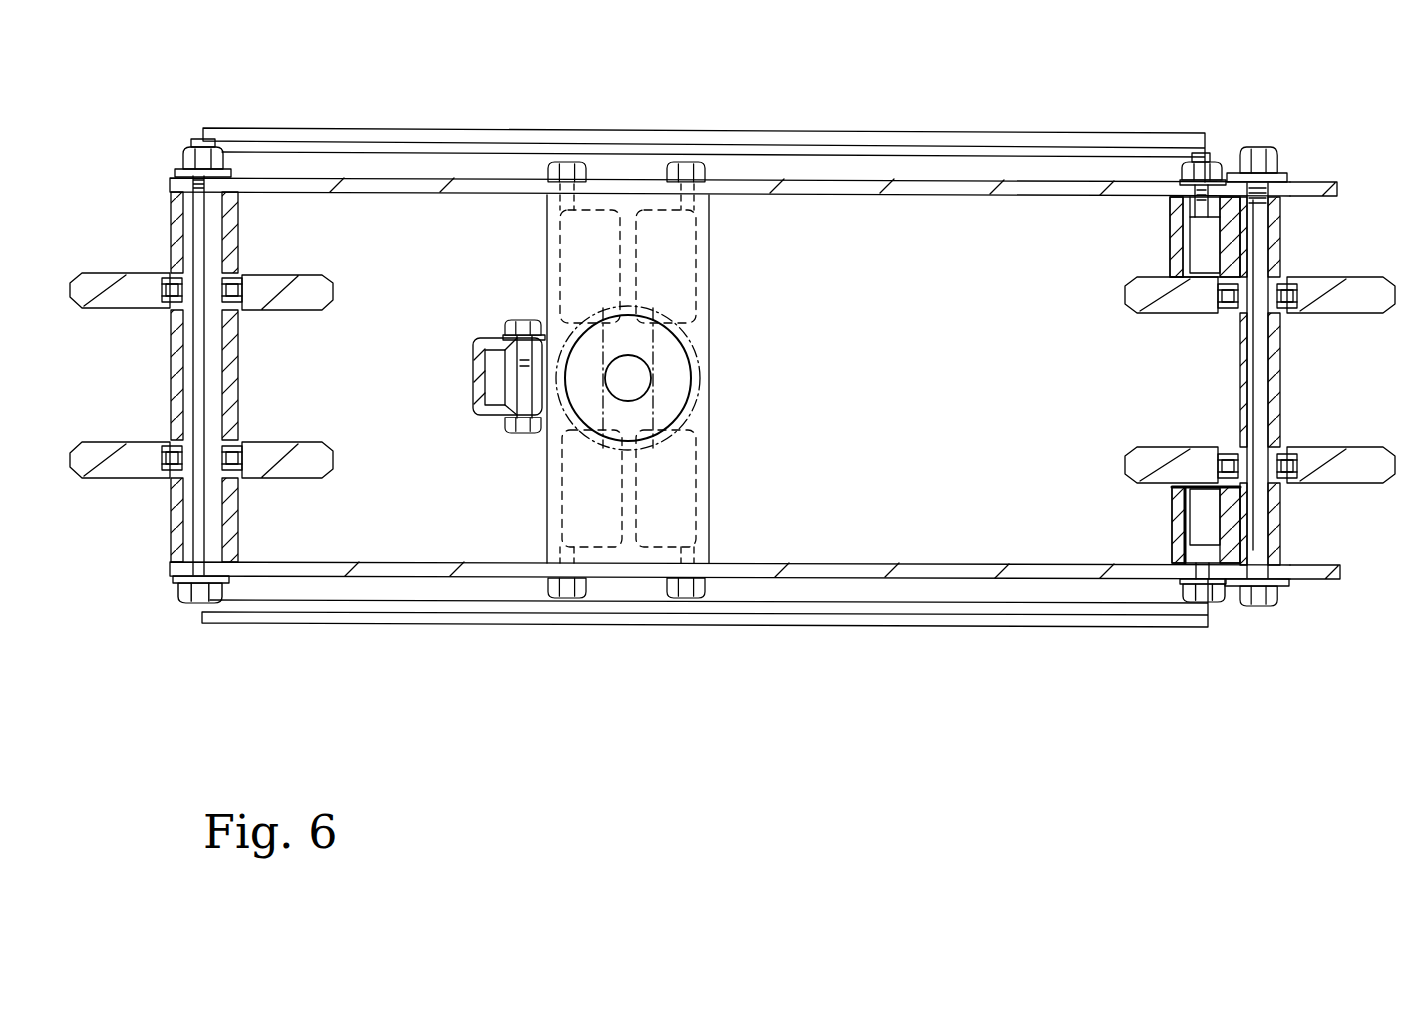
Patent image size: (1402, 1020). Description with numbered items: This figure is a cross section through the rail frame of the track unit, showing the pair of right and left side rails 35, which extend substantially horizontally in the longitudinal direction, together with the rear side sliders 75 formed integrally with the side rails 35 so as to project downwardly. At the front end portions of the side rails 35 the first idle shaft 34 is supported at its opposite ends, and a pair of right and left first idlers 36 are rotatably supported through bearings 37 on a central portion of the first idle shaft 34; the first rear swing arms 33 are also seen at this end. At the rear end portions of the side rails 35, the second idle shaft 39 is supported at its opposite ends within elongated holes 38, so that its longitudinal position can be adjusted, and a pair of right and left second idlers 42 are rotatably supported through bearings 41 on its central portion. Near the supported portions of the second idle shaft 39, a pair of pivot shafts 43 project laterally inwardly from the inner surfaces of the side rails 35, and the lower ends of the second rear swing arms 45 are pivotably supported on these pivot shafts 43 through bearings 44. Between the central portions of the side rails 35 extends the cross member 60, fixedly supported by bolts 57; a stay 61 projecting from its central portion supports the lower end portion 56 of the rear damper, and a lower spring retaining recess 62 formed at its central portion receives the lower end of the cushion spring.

The first rear swing arm 33 is at (176, 222).
The first idle shaft 34 is at (172, 514).
The side rail 35 is at (914, 197).
The first idler 36 is at (300, 442).
The bearing 37 is at (234, 445).
The elongated hole 38 is at (1308, 183).
The second idle shaft 39 is at (1262, 381).
The bearing 41 is at (1292, 308).
The second idler 42 is at (1357, 295).
The pivot shaft 43 is at (1182, 202).
The bearing 44 is at (1192, 216).
The second rear swing arm 45 is at (1176, 247).
The lower end portion of rear damper 56 is at (512, 341).
The bolt 57 is at (571, 600).
The cross member 60 is at (710, 481).
The stay 61 is at (492, 381).
The lower spring retaining recess 62 is at (668, 374).
The rear side slider 75 is at (905, 150).